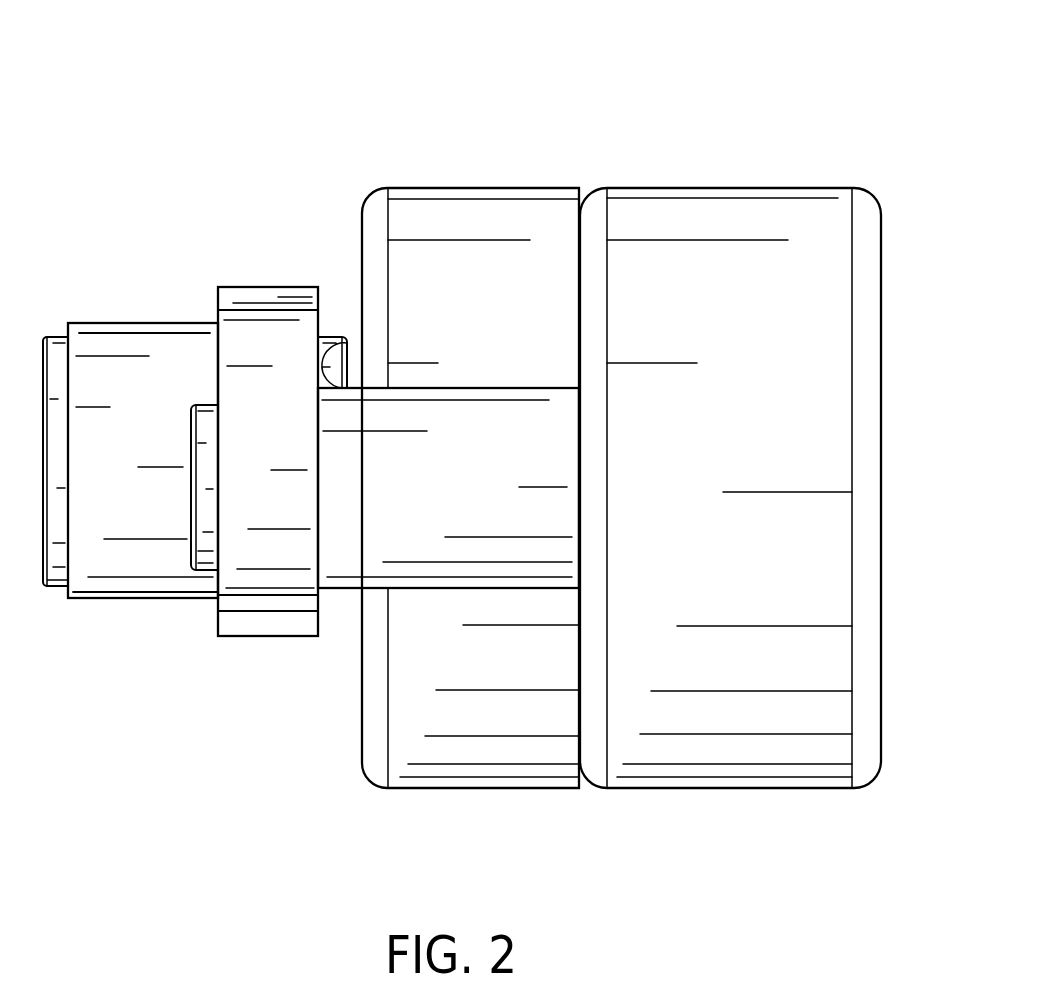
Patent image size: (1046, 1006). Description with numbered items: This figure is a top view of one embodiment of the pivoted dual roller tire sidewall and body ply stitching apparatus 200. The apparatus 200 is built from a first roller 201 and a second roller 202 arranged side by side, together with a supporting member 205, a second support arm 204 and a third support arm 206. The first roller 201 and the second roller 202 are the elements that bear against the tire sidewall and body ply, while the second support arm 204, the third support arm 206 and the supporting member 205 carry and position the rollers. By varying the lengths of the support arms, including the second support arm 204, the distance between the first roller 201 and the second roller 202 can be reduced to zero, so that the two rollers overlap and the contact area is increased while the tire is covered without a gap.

The pivoted dual roller tire sidewall and body ply stitching apparatus 200 is at (748, 150).
The first roller 201 is at (497, 220).
The second roller 202 is at (743, 747).
The second support arm 204 is at (353, 557).
The supporting member 205 is at (260, 298).
The third support arm 206 is at (93, 342).